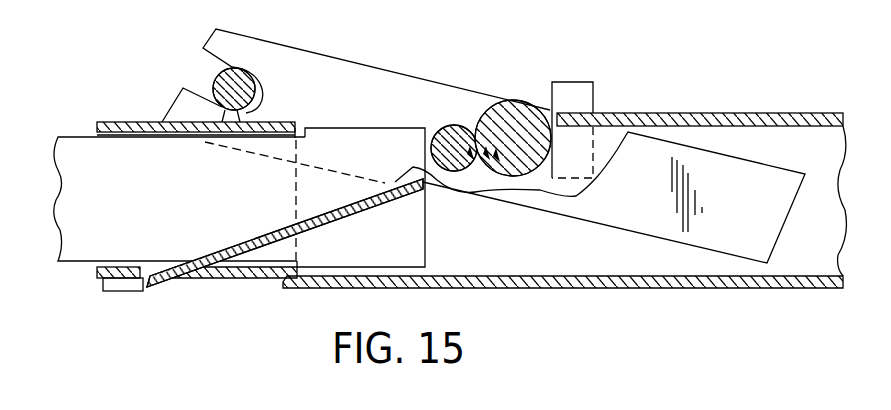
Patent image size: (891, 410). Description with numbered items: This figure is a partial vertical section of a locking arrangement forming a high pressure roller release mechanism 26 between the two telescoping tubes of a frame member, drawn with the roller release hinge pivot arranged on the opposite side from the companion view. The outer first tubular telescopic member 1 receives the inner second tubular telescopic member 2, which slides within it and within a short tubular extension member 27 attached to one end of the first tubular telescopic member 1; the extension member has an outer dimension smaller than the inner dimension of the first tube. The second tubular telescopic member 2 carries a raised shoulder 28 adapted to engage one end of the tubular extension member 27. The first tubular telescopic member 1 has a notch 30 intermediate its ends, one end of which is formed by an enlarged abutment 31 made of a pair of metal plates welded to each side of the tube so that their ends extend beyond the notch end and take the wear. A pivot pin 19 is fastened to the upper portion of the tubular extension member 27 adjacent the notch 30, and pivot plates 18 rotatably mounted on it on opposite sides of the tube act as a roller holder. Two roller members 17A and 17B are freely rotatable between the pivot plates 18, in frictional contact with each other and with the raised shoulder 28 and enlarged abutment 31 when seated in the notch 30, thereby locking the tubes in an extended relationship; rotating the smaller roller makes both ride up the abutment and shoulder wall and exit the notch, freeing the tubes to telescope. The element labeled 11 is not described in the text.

The first tubular telescopic member 1 is at (747, 113).
The second tubular telescopic member 2 is at (73, 136).
The lever rod 11 is at (219, 247).
The roller member 17A is at (448, 131).
The roller member 17B is at (520, 101).
The pivot plates 18 is at (612, 217).
The pivot pin 19 is at (212, 77).
The high pressure roller release mechanism 26 is at (437, 72).
The tubular extension member 27 is at (213, 281).
The raised shoulder 28 is at (320, 128).
The notch 30 is at (478, 167).
The enlarged abutment 31 is at (578, 82).